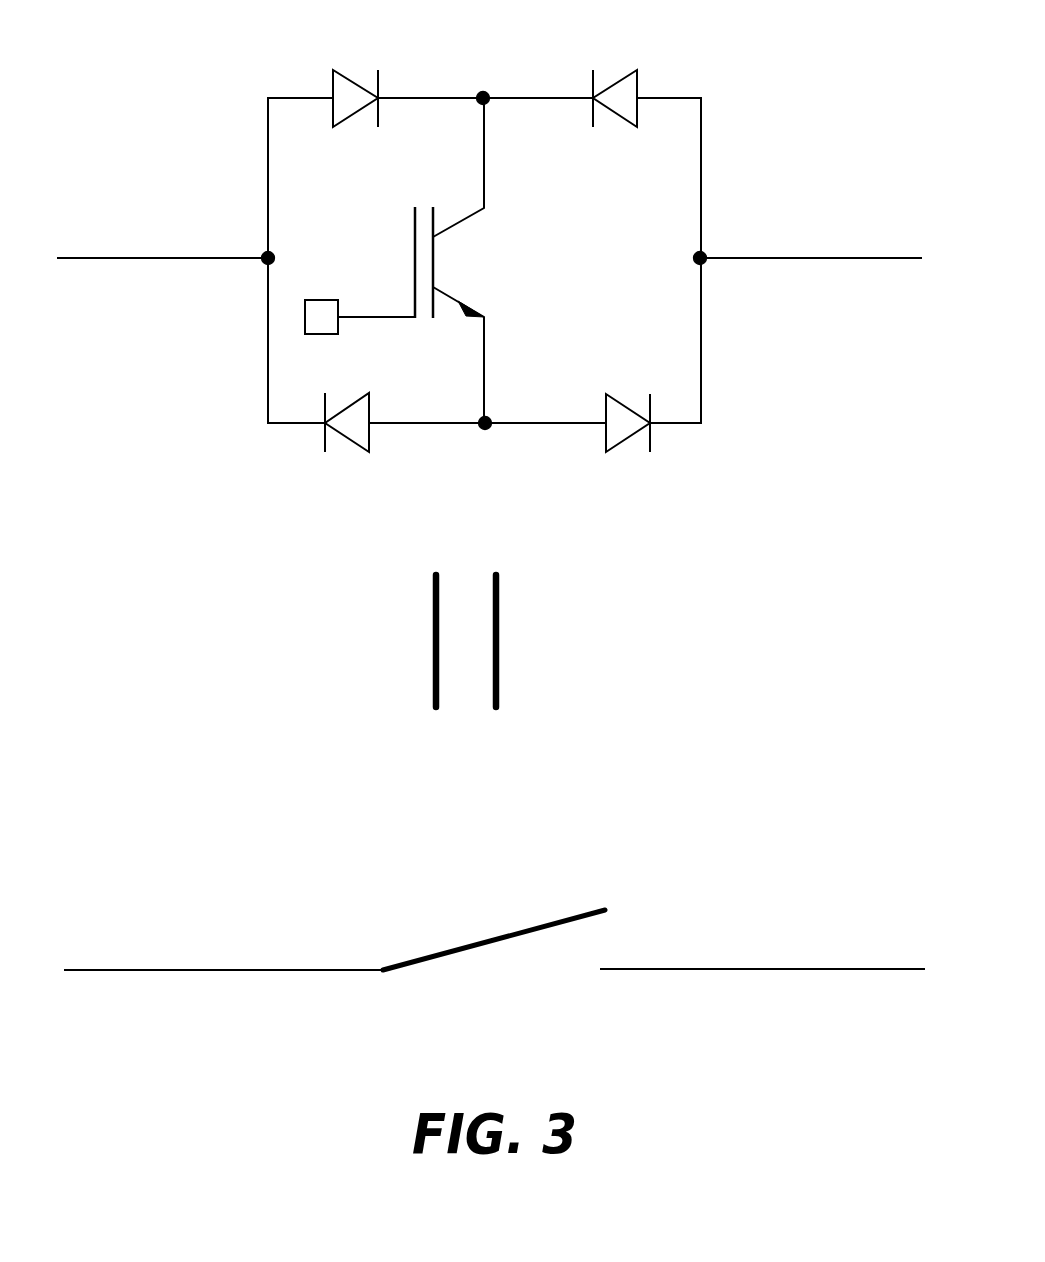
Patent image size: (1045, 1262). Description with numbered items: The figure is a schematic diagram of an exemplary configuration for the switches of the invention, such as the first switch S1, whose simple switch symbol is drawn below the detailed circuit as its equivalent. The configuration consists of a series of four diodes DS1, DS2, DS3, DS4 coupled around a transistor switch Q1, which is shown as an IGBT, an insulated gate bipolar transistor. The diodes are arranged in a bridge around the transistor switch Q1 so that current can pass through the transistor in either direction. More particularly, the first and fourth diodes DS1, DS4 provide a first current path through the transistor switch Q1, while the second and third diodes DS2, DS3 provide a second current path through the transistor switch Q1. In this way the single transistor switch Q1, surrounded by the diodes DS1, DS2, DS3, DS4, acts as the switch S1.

The first diode DS1 is at (357, 71).
The second diode DS2 is at (612, 72).
The third diode DS3 is at (348, 454).
The fourth diode DS4 is at (632, 451).
The transistor switch Q1 is at (459, 260).
The first switch S1 is at (494, 909).